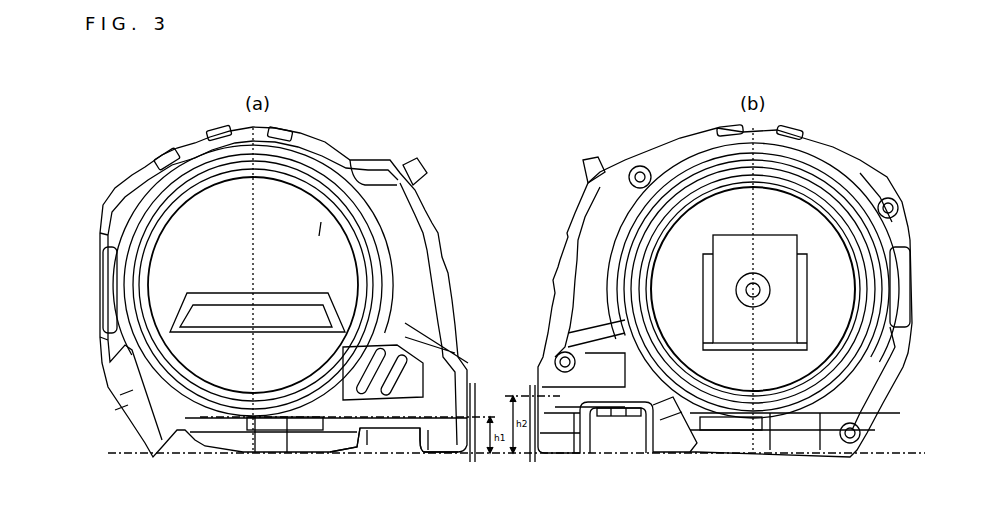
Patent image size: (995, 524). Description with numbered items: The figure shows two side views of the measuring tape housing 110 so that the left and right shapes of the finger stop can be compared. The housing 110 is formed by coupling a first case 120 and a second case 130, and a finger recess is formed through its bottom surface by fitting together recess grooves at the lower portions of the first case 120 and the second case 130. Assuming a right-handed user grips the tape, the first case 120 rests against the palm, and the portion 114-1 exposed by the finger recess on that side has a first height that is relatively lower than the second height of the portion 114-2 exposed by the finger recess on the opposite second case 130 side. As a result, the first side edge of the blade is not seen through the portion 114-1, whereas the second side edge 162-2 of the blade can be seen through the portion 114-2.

The housing 110 is at (506, 285).
The first case 120 is at (220, 130).
The second case 130 is at (795, 128).
The portion exposed by the finger recess in the first case 114-1 is at (387, 437).
The portion exposed by the finger recess in the second case 114-2 is at (625, 438).
The second side edge of the blade 162-2 is at (622, 413).